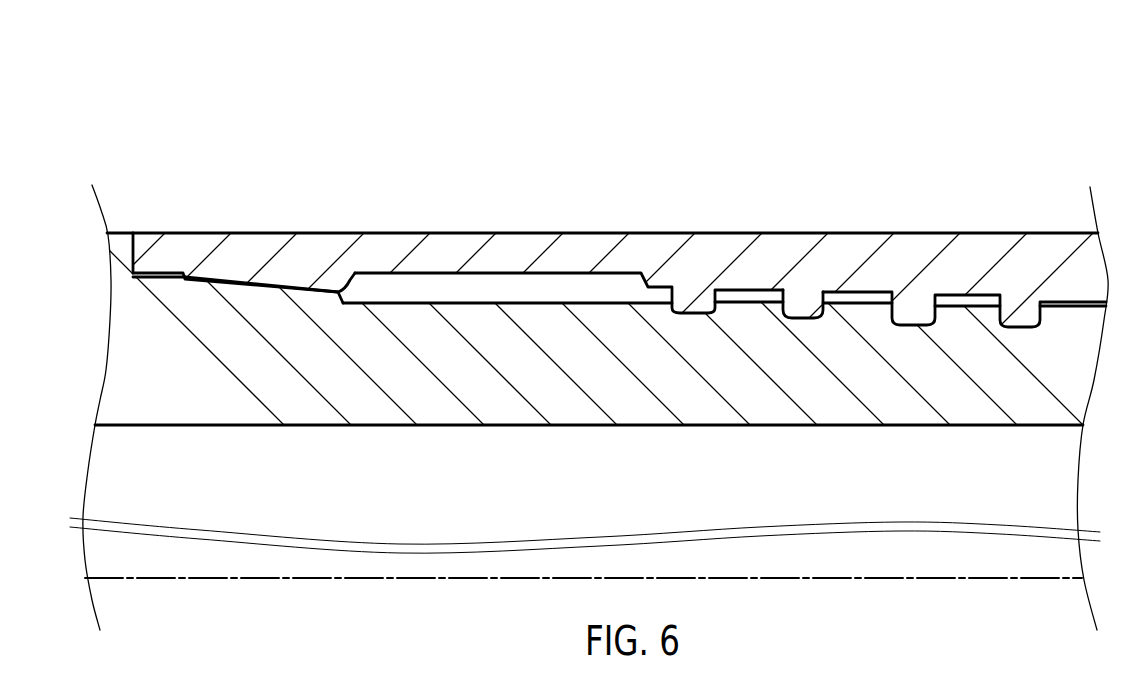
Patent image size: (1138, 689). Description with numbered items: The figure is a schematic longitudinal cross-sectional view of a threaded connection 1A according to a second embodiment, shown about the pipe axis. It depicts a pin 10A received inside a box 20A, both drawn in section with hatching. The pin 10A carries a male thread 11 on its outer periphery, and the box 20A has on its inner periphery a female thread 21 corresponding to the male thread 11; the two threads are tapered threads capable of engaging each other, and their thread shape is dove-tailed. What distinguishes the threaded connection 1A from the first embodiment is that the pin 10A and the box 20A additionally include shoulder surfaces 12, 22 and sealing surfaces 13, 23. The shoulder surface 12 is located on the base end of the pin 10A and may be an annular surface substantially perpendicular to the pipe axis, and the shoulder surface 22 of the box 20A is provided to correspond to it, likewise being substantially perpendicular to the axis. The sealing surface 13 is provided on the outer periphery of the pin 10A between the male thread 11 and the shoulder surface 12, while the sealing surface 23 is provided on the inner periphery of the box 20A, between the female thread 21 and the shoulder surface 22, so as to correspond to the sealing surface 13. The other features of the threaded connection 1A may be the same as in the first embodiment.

The threaded connection 1A is at (1042, 48).
The pin 10A is at (951, 444).
The male thread 11 is at (800, 333).
The shoulder surface 12 is at (124, 268).
The sealing surface 13 is at (247, 285).
The box 20A is at (931, 219).
The female thread 21 is at (835, 273).
The shoulder surface 22 is at (137, 242).
The sealing surface 23 is at (278, 287).